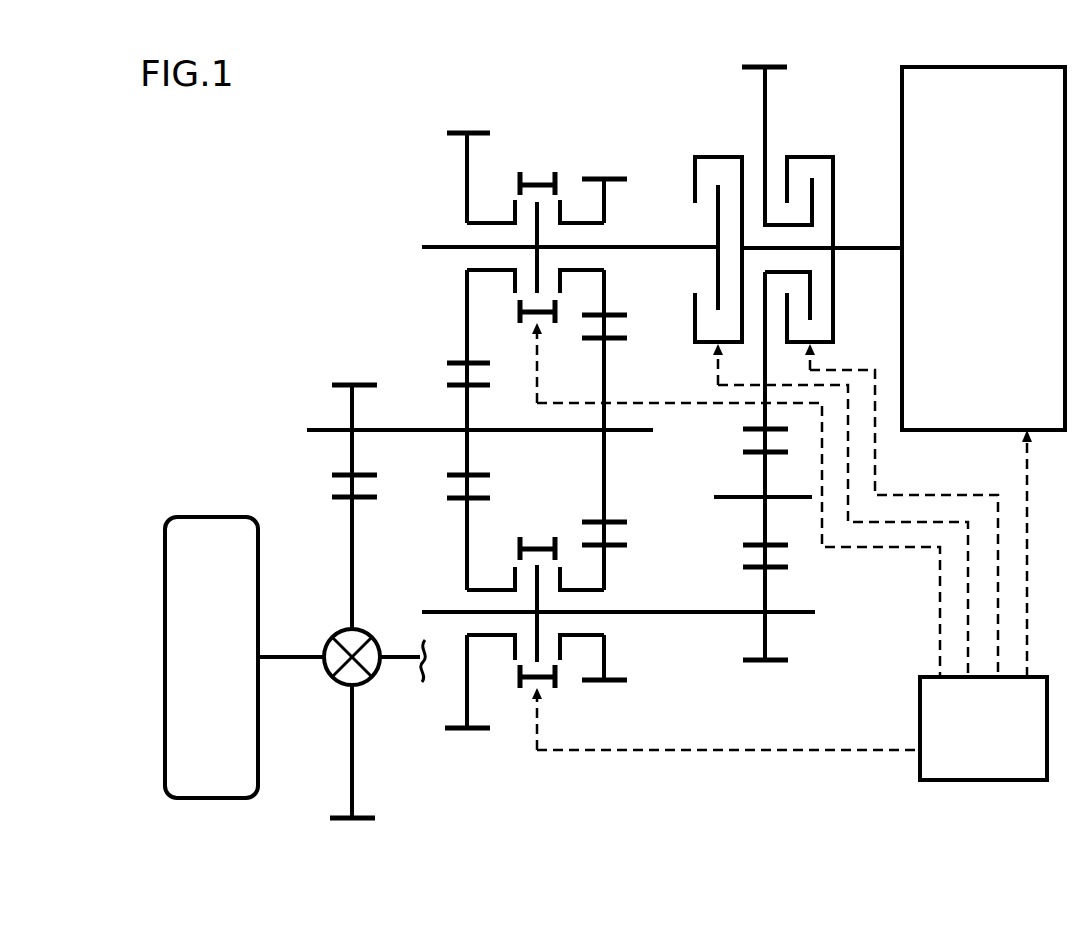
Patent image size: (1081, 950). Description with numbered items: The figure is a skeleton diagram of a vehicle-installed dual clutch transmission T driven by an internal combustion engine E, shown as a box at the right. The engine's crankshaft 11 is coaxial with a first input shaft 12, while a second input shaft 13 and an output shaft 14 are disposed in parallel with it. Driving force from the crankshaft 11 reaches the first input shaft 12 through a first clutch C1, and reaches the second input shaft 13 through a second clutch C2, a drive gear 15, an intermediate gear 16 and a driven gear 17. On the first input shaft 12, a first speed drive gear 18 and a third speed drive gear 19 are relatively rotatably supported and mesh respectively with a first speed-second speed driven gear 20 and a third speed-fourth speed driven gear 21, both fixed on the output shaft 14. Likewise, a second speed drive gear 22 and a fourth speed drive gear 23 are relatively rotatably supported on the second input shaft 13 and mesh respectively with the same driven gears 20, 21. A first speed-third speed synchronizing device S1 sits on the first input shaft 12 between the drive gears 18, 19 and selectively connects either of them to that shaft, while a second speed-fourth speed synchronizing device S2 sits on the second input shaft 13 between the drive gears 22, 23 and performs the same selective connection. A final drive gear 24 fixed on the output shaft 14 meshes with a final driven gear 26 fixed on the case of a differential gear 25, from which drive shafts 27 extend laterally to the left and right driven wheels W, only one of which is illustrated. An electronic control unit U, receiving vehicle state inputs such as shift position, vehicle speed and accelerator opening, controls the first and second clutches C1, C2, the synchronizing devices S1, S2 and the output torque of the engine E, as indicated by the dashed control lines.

The dual clutch transmission T is at (345, 254).
The internal combustion engine E is at (983, 248).
The electronic control unit U is at (983, 728).
The driven wheel W is at (185, 516).
The crankshaft 11 is at (867, 246).
The first input shaft 12 is at (660, 245).
The second input shaft 13 is at (677, 615).
The output shaft 14 is at (516, 428).
The drive gear 15 is at (760, 66).
The intermediate gear 16 is at (748, 451).
The driven gear 17 is at (748, 566).
The first speed drive gear 18 is at (607, 177).
The third speed drive gear 19 is at (456, 131).
The first speed-second speed driven gear 20 is at (627, 338).
The third speed-fourth speed driven gear 21 is at (450, 385).
The second speed drive gear 22 is at (628, 545).
The fourth speed drive gear 23 is at (450, 497).
The final drive gear 24 is at (341, 384).
The differential gear 25 is at (330, 639).
The final driven gear 26 is at (335, 497).
The drive shaft 27 is at (305, 661).
The first speed-third speed synchronizing device S1 is at (536, 166).
The second speed-fourth speed synchronizing device S2 is at (536, 531).
The first clutch C1 is at (718, 148).
The second clutch C2 is at (810, 148).